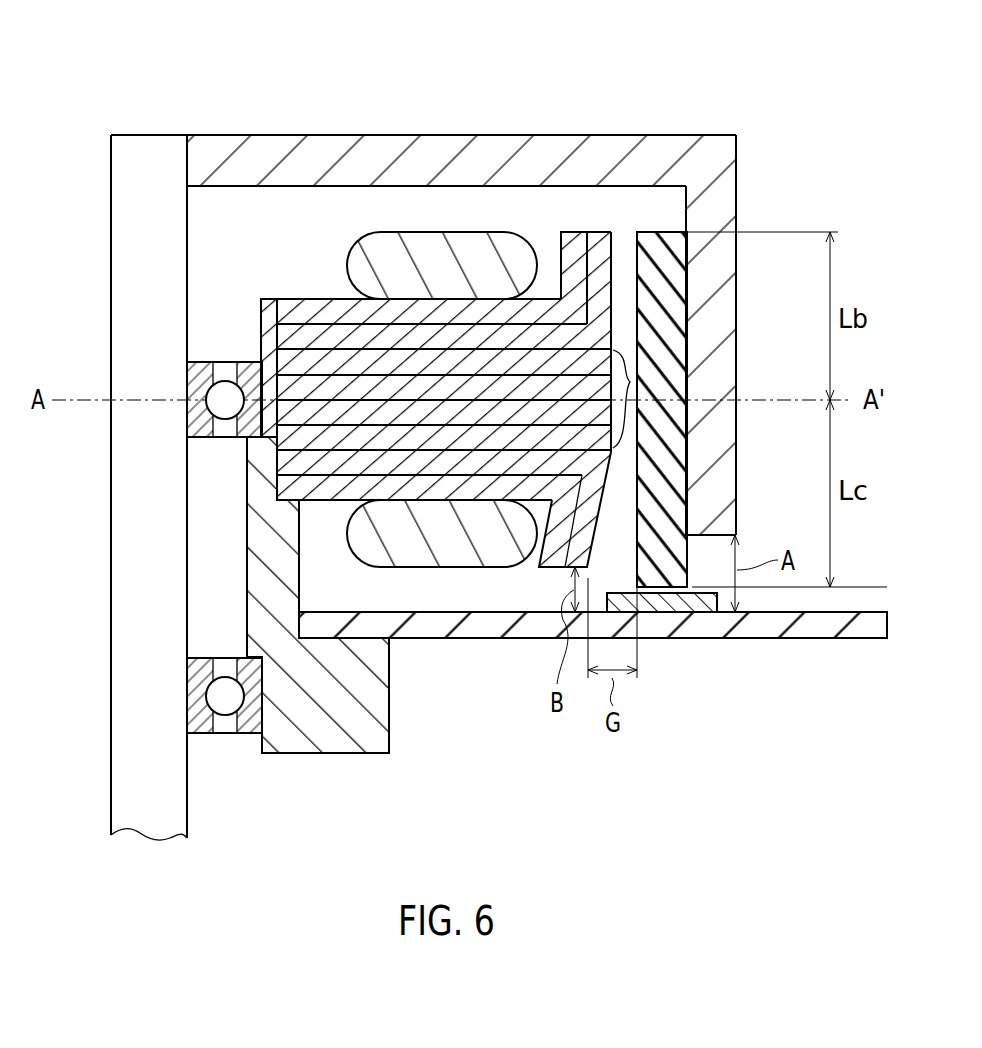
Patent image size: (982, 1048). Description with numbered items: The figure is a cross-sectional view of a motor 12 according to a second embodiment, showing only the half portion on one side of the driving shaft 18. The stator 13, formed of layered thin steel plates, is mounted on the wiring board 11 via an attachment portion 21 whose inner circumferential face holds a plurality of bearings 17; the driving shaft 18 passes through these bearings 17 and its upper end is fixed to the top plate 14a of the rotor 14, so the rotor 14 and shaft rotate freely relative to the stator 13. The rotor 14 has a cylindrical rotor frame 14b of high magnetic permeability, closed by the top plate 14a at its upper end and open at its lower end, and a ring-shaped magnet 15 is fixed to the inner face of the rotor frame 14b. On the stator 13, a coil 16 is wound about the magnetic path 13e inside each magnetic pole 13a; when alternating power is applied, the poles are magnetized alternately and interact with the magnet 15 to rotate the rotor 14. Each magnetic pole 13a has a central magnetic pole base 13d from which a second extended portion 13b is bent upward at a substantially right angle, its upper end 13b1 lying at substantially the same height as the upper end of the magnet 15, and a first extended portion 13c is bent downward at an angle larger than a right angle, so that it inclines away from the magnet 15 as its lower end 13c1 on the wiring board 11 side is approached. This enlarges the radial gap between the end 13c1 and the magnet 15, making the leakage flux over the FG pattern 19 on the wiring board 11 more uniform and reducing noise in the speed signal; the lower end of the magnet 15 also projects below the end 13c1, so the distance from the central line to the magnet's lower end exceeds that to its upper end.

The wiring board 11 is at (813, 627).
The motor 12 is at (80, 72).
The stator 13 is at (300, 298).
The magnetic pole 13a is at (327, 500).
The second extended portion 13b is at (603, 253).
The upper end of the second extended portion 13b1 is at (598, 233).
The first extended portion 13c is at (587, 520).
The end of the first extended portion 13c1 is at (548, 568).
The magnetic pole base 13d is at (630, 383).
The magnetic path 13e is at (335, 360).
The rotor 14 is at (737, 200).
The top plate 14a is at (485, 148).
The rotor frame 14b is at (718, 320).
The magnet 15 is at (670, 277).
The coil 16 is at (415, 243).
The bearing 17 is at (195, 374).
The driving shaft 18 is at (150, 148).
The FG pattern 19 is at (700, 607).
The attachment portion 21 is at (338, 754).